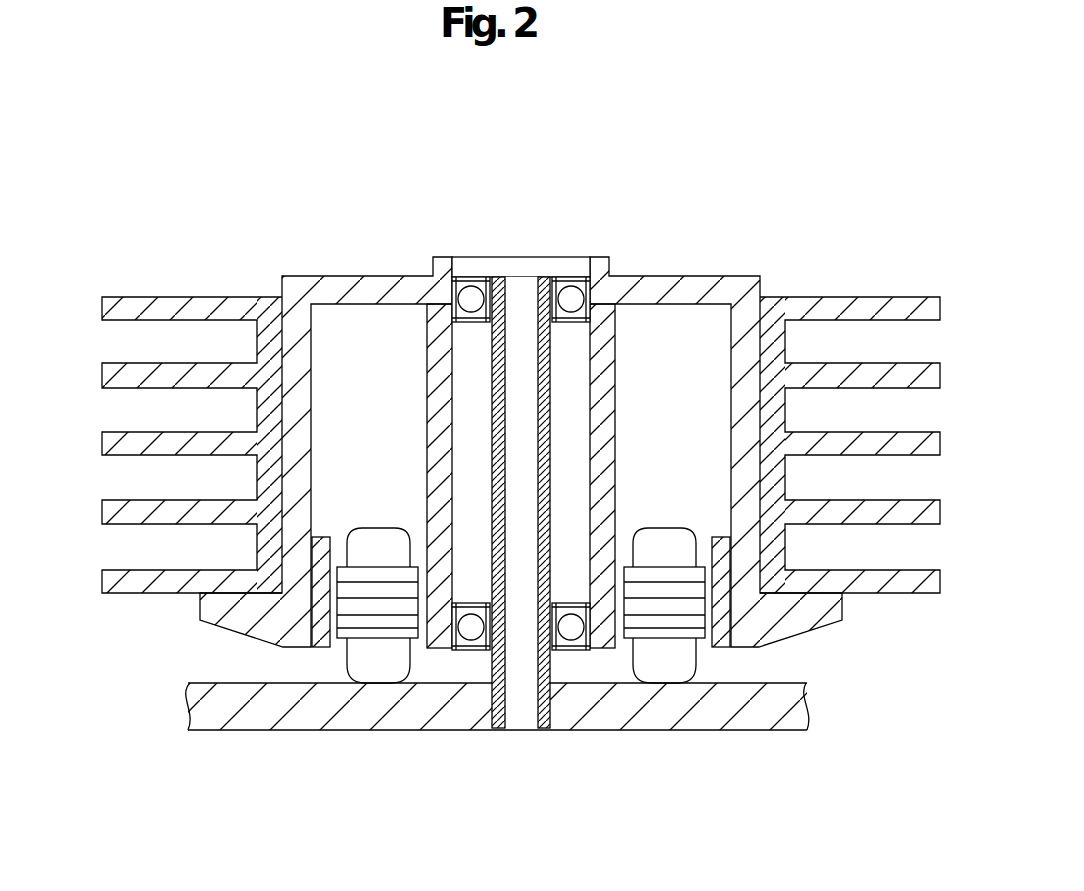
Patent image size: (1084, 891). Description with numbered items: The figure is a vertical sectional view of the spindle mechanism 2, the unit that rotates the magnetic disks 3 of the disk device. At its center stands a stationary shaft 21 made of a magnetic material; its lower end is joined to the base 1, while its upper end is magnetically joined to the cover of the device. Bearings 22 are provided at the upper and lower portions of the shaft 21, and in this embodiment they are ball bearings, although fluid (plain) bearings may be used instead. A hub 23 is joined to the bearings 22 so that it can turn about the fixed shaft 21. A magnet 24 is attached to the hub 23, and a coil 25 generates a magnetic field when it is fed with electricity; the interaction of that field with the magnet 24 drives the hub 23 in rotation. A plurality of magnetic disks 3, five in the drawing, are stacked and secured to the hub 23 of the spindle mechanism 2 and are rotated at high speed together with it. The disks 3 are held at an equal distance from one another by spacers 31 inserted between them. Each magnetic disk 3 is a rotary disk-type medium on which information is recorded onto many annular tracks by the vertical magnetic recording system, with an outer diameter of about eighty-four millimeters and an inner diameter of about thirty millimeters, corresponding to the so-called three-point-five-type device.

The base 1 is at (360, 722).
The spindle mechanism 2 is at (521, 458).
The magnetic disk 3 is at (491, 398).
The spacer 31 is at (262, 340).
The shaft 21 is at (541, 277).
The bearing 22 is at (574, 291).
The hub 23 is at (712, 288).
The magnet 24 is at (718, 645).
The coil 25 is at (665, 630).